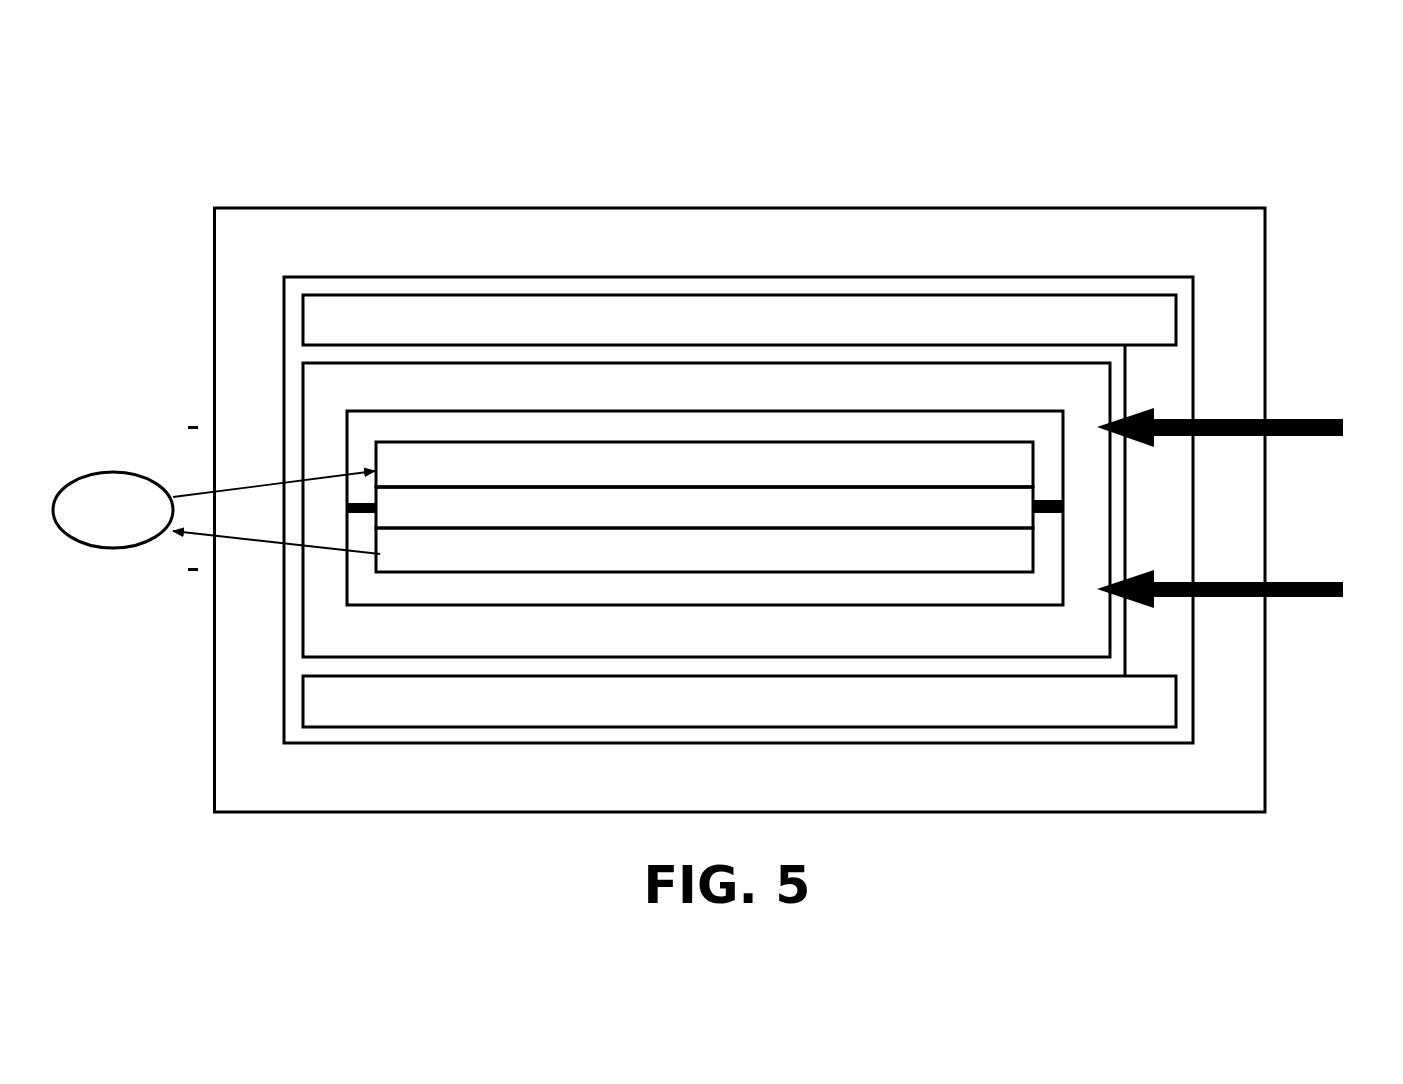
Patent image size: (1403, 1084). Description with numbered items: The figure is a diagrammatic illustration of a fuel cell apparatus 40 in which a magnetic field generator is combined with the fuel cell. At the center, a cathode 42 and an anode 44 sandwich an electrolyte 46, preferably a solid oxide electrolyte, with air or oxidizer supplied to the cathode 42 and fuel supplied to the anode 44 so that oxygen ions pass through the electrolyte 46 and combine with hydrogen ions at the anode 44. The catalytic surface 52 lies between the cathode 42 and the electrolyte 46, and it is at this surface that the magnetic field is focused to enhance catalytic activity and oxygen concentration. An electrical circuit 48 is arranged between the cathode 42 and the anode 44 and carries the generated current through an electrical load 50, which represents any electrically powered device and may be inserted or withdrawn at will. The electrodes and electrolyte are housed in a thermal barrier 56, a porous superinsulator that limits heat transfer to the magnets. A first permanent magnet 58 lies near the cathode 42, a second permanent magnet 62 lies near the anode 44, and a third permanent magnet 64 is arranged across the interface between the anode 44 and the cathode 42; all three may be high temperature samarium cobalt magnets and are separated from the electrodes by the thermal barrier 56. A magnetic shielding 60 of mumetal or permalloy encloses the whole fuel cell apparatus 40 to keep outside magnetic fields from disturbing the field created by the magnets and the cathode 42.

The fuel cell apparatus 40 is at (1313, 155).
The cathode 42 is at (1035, 458).
The anode 44 is at (1032, 560).
The electrolyte 46 is at (1023, 522).
The electrical circuit 48 is at (267, 543).
The electrical load 50 is at (95, 485).
The catalytic surface 52 is at (1035, 485).
The thermal barrier 56 is at (1036, 388).
The first permanent magnet 58 is at (1148, 323).
The magnetic shielding 60 is at (1225, 249).
The second permanent magnet 62 is at (1072, 697).
The third permanent magnet 64 is at (1157, 628).